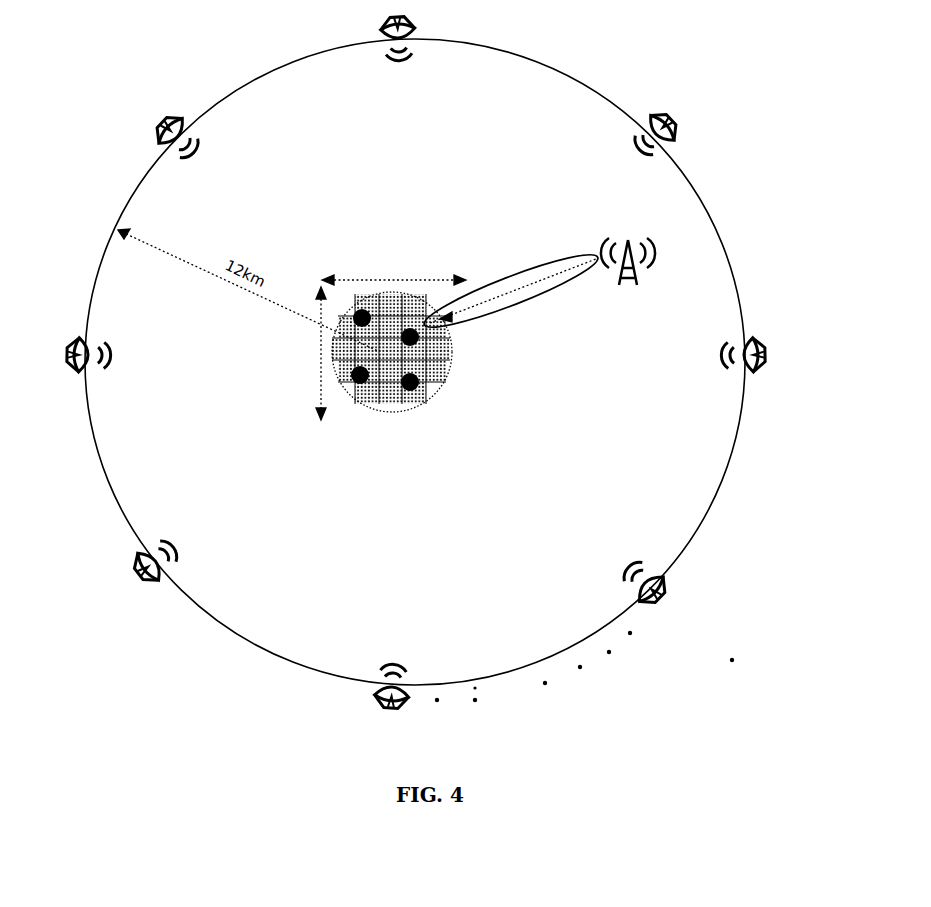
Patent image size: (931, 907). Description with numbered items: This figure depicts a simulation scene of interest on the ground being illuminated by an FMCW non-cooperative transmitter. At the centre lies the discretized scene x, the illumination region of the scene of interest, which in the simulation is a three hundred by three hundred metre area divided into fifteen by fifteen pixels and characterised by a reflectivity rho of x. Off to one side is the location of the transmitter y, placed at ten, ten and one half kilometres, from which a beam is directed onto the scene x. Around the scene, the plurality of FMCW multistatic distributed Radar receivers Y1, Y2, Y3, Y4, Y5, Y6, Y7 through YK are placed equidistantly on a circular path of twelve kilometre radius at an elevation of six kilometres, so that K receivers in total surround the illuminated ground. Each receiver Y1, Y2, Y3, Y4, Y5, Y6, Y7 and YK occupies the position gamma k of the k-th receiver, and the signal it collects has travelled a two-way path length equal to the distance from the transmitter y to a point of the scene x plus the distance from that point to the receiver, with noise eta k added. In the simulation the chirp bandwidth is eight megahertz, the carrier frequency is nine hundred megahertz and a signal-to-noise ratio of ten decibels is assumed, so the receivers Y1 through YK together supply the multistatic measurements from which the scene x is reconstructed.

The first FMCW multistatic distributed Radar receiver Y1 is at (750, 366).
The second FMCW multistatic distributed Radar receiver Y2 is at (664, 134).
The third FMCW multistatic distributed Radar receiver Y3 is at (408, 37).
The fourth FMCW multistatic distributed Radar receiver Y4 is at (167, 137).
The fifth FMCW multistatic distributed Radar receiver Y5 is at (75, 369).
The sixth FMCW multistatic distributed Radar receiver Y6 is at (155, 575).
The seventh FMCW multistatic distributed Radar receiver Y7 is at (376, 686).
The K-th FMCW multistatic distributed Radar receiver YK is at (655, 585).
The location of the transmitter y is at (625, 282).
The illumination region of the scene of interest x is at (364, 365).